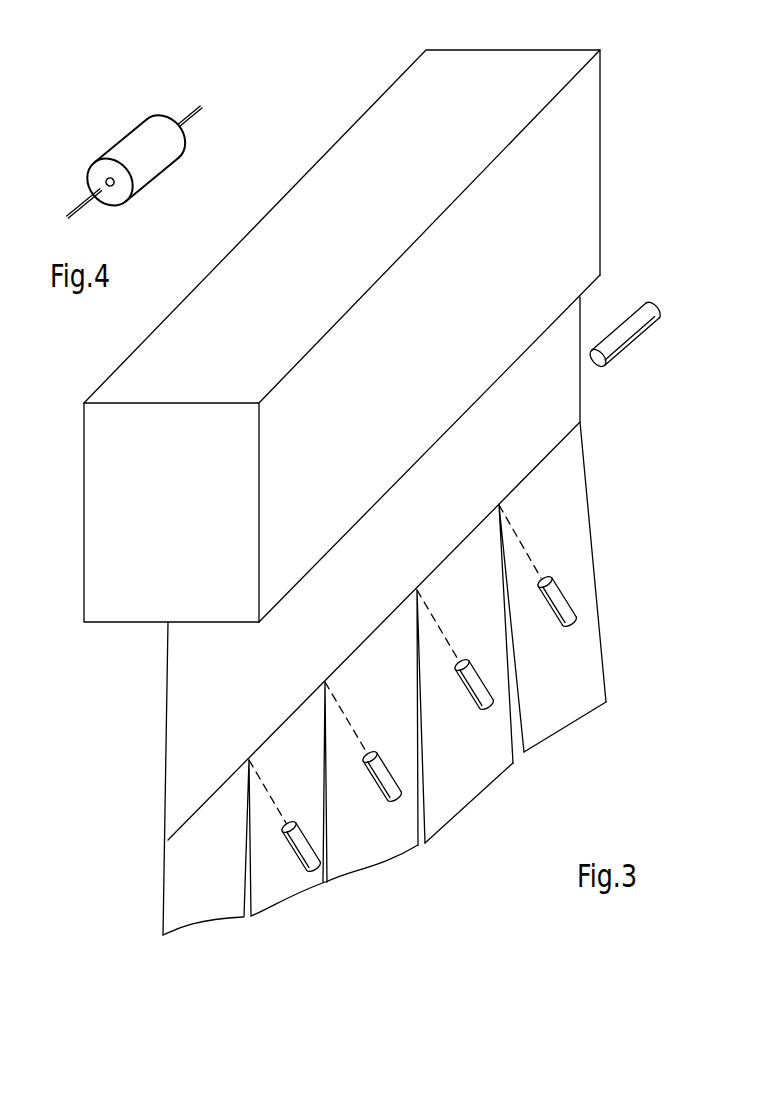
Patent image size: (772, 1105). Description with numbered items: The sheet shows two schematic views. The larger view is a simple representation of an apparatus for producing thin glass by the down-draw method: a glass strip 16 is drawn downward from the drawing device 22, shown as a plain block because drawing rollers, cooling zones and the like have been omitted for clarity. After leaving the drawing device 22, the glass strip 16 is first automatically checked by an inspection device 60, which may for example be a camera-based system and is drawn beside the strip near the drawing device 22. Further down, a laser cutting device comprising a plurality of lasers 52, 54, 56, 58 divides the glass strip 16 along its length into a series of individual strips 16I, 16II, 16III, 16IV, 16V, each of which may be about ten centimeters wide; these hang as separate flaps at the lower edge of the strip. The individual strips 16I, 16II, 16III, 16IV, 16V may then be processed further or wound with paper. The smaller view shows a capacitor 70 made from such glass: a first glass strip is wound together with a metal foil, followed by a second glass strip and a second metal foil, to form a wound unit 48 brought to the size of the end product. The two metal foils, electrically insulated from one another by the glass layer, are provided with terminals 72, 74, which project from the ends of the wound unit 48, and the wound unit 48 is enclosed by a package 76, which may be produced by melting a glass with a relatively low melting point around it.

In FIG. 3, the glass strip 16 is at (207, 708).
In FIG. 3, the first individual strip 16I is at (197, 847).
In FIG. 3, the second individual strip 16II is at (290, 883).
In FIG. 3, the third individual strip 16III is at (385, 840).
In FIG. 3, the fourth individual strip 16IV is at (468, 787).
In FIG. 3, the fifth individual strip 16V is at (569, 700).
In FIG. 3, the drawing device 22 is at (579, 152).
In FIG. 4, the wound unit 48 is at (122, 191).
In FIG. 3, the laser 52 is at (307, 850).
In FIG. 3, the laser 54 is at (390, 783).
In FIG. 3, the laser 56 is at (486, 692).
In FIG. 3, the laser 58 is at (568, 607).
In FIG. 3, the inspection device 60 is at (631, 345).
In FIG. 4, the capacitor 70 is at (185, 143).
In FIG. 4, the terminal 72 is at (72, 207).
In FIG. 4, the terminal 74 is at (197, 133).
In FIG. 4, the package 76 is at (152, 167).